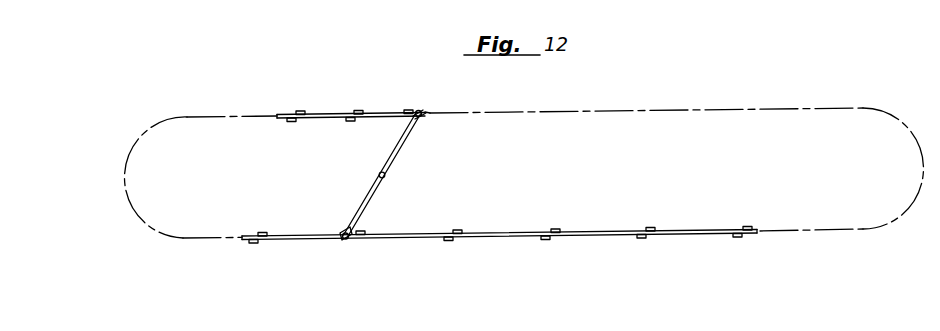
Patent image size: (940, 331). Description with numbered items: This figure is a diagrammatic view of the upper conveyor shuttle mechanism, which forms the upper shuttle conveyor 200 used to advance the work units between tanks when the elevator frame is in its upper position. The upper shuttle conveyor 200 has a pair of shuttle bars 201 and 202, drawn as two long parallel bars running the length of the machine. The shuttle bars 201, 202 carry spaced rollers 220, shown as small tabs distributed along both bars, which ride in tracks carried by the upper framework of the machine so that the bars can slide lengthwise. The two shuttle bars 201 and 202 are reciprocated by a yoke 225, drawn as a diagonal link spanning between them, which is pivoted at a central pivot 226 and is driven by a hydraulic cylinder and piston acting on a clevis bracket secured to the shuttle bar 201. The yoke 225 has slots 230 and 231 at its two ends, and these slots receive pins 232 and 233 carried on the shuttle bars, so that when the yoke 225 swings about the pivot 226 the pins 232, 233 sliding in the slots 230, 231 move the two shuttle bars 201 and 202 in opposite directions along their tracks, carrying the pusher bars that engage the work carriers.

The upper shuttle conveyor 200 is at (594, 237).
The shuttle bar 201 is at (412, 233).
The shuttle bar 202 is at (333, 113).
The rollers 220 is at (291, 122).
The yoke 225 is at (369, 200).
The pivot 226 is at (387, 175).
The slot 230 is at (342, 240).
The slot 231 is at (417, 110).
The pin 232 is at (344, 231).
The pin 233 is at (426, 116).